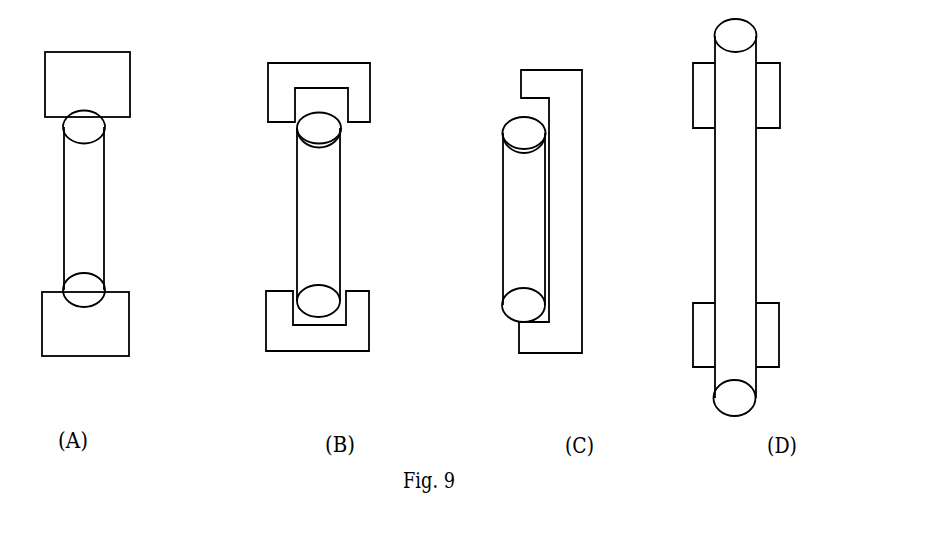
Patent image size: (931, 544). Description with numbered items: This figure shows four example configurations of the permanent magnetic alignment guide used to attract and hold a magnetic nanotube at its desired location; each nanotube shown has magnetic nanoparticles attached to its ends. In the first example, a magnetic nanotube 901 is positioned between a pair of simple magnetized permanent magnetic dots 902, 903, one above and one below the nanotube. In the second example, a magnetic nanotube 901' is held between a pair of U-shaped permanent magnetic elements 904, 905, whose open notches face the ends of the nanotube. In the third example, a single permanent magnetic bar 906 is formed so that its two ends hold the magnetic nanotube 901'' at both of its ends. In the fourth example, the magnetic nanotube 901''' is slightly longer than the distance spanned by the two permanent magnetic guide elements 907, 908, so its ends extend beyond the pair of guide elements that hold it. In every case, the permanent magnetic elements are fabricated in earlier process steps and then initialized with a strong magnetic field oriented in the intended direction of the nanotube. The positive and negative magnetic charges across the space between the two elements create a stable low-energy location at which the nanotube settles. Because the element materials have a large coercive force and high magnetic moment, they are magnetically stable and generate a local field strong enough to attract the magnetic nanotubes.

The magnetic nanotube 901 is at (84, 209).
The permanent magnetic dot 902 is at (87, 84).
The permanent magnetic dot 903 is at (85, 324).
The magnetic nanotube 901' is at (321, 215).
The U-shaped permanent magnetic element 904 is at (319, 91).
The U-shaped permanent magnetic element 905 is at (317, 321).
The magnetic nanotube 901'' is at (511, 219).
The permanent magnetic bar 906 is at (553, 211).
The magnetic nanotube 901''' is at (724, 217).
The permanent magnetic guide element 907 is at (750, 95).
The permanent magnetic guide element 908 is at (745, 335).